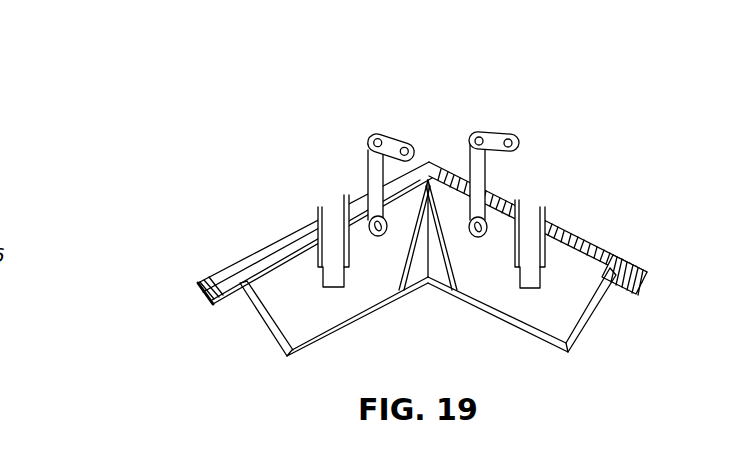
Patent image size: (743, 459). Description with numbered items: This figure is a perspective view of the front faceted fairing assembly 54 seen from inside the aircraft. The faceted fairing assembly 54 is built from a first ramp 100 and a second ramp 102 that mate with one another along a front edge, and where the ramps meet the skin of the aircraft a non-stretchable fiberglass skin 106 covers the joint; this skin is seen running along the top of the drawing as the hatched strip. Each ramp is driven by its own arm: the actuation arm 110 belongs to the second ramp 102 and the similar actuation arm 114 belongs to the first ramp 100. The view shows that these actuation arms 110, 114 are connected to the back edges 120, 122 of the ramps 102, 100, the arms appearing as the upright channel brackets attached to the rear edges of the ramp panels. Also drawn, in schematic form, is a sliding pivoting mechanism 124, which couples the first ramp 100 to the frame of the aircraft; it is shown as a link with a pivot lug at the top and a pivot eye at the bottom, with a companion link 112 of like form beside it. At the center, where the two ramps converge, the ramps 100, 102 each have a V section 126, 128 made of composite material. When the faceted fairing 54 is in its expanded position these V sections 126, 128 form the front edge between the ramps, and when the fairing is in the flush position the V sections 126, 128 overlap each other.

The front faceted fairing assembly 54 is at (445, 38).
The first ramp 100 is at (572, 303).
The second ramp 102 is at (283, 307).
The non-stretchable fiberglass skin 106 is at (228, 272).
The actuation arm 110 is at (330, 212).
The left pivot link 112 is at (392, 137).
The actuation arm 114 is at (538, 210).
The back edge 120 is at (527, 323).
The back edge 122 is at (350, 317).
The sliding pivoting mechanism 124 is at (497, 135).
The V section 126 is at (420, 268).
The V section 128 is at (439, 268).